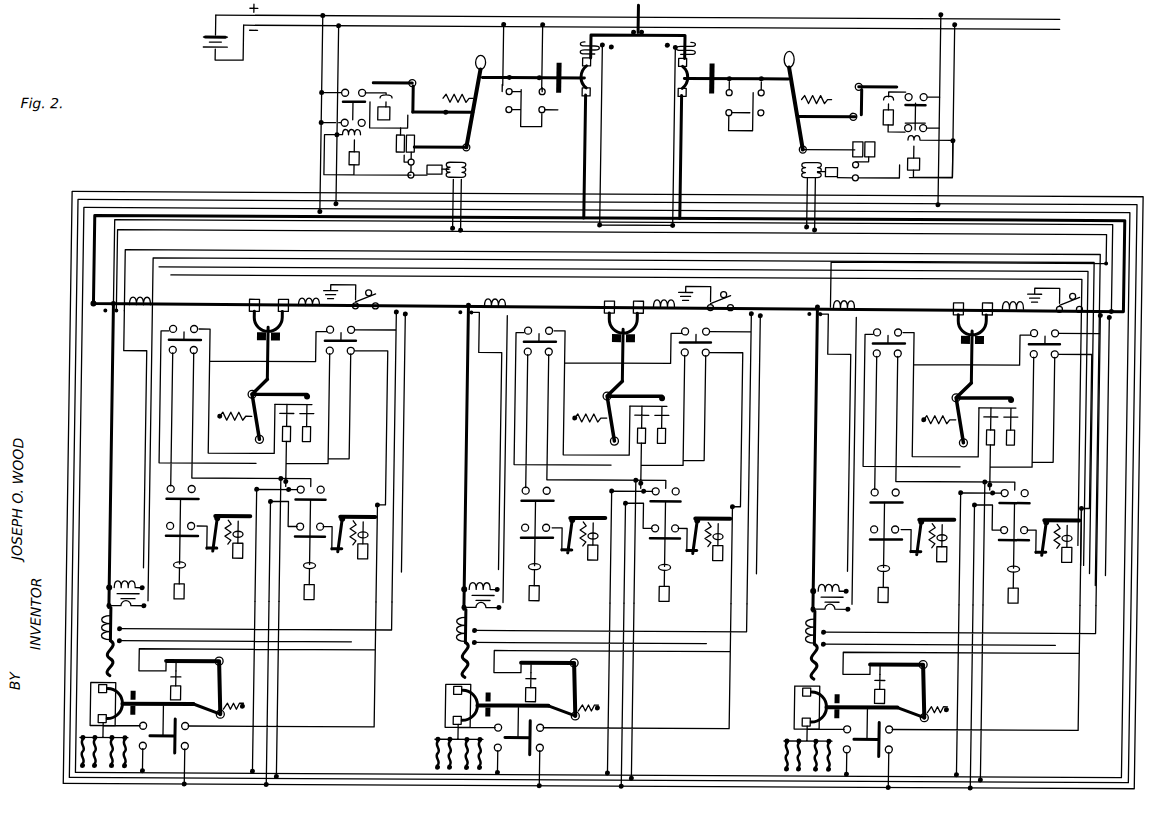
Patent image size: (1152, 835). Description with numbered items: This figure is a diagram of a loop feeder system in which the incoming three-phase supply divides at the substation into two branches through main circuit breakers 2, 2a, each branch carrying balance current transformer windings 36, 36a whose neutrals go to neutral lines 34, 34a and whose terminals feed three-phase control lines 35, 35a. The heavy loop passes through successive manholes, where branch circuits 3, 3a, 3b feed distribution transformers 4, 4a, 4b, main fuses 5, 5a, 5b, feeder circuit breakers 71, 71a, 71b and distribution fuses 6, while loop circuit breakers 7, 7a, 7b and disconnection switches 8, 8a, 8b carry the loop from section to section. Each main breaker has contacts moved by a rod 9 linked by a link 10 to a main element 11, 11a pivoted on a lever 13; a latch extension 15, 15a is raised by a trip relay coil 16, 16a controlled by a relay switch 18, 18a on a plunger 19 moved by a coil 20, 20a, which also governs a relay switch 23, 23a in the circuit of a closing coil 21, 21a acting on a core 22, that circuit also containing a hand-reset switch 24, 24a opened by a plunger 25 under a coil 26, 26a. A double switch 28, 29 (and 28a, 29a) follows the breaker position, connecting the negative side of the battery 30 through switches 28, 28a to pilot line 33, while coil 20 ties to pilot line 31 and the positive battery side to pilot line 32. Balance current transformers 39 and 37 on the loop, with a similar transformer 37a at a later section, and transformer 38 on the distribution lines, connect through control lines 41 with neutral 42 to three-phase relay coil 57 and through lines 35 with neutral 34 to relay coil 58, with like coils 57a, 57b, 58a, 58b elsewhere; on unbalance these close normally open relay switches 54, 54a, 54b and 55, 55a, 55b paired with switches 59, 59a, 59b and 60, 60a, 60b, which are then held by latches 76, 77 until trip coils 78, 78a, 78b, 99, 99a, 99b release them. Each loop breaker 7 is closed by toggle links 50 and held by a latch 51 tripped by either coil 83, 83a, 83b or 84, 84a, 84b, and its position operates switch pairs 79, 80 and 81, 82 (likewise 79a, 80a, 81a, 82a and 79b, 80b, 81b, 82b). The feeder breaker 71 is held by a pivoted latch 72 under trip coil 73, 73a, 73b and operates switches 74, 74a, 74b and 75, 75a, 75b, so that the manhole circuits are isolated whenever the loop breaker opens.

The main circuit breaker 2 is at (542, 76).
The main circuit breaker 2a is at (684, 82).
The branch circuit 3 is at (96, 445).
The branch circuit 3a is at (450, 447).
The line conductor 3b is at (795, 449).
The distribution transformer 4 is at (111, 594).
The transformer 4a is at (463, 595).
The transformer 4b is at (808, 597).
The main fuse 5 is at (97, 657).
The main fuse 5a is at (449, 659).
The signal conductor 5b is at (794, 661).
The fuses 6 is at (84, 756).
The circuit breaker 7 is at (268, 329).
The circuit breaker 7a is at (623, 330).
The circuit breaker 7b is at (972, 332).
The disconnection switch 8 is at (350, 297).
The disconnection switch 8a is at (705, 298).
The grounded switch 8b is at (1054, 300).
The rod 9 is at (521, 74).
The link 10 is at (492, 67).
The main element 11 is at (470, 78).
The operating lever 11a is at (800, 84).
The lever 13 is at (444, 110).
The extension 15 is at (405, 81).
The arm 15a is at (886, 84).
The controlling coil 16 is at (392, 96).
The magnet 16a is at (883, 112).
The relay switch 18 is at (350, 89).
The contact 18a is at (918, 93).
The plunger or armature 19 is at (355, 168).
The coil 20 is at (343, 138).
The coil 20a is at (925, 146).
The closing coil 21 is at (396, 142).
The relay 21a is at (852, 142).
The core 22 is at (417, 140).
The relay switch 23 is at (338, 118).
The contact 23a is at (930, 123).
The relay switch 24 is at (408, 165).
The contact 24a is at (852, 176).
The armature or plunger 25 is at (436, 174).
The coil 26 is at (466, 166).
The coil 26a is at (804, 168).
The switch 28 is at (512, 108).
The switch 28a is at (750, 131).
The switch 29 is at (548, 108).
The contact 29a is at (726, 104).
The battery 30 is at (206, 42).
The pilot line 31 is at (202, 191).
The pilot line 32 is at (230, 199).
The pilot line 33 is at (260, 207).
The neutral line 34 is at (383, 224).
The neutral line 34a is at (855, 224).
The three-phase control lines 35 is at (423, 224).
The conductor 35a is at (922, 224).
The three-phase windings 36 is at (582, 46).
The three-phase windings 36a is at (694, 46).
The balanced current transformer 37 is at (302, 292).
The coil 37a is at (862, 298).
The three-phase current transformer 38 is at (93, 623).
The balance current transformer 39 is at (137, 292).
The three-phase control lines 41 is at (312, 236).
The neutral line 42 is at (327, 260).
The toggle links 50 is at (241, 419).
The latch 51 is at (277, 385).
The relay switch 54 is at (156, 533).
The contact 54a is at (510, 536).
The contact 54b is at (859, 545).
The relay switch 55 is at (302, 542).
The contact 55a is at (681, 515).
The contact 55b is at (1033, 517).
The three-phase relay coil 57 is at (195, 585).
The resistance 57a is at (551, 598).
The resistance 57b is at (903, 594).
The three-phase relay coil 58 is at (302, 589).
The relay 58a is at (683, 585).
The relay 58b is at (1004, 598).
The switch 59 is at (156, 524).
The contact 59a is at (510, 526).
The contact 59b is at (859, 528).
The switch 60 is at (322, 519).
The contact 60a is at (681, 518).
The contact 60b is at (1031, 520).
The circuit breaker 71 is at (142, 694).
The relay 71a is at (482, 706).
The relay 71b is at (827, 708).
The pivoted latch 72 is at (205, 687).
The trip coil 73 is at (189, 685).
The contact 73a is at (546, 687).
The contact 73b is at (895, 688).
The switch 74 is at (157, 743).
The contact 74a is at (512, 747).
The contact 74b is at (861, 747).
The switch 75 is at (202, 738).
The contact 75a is at (559, 741).
The contact 75b is at (908, 743).
The latch 76 is at (228, 543).
The latch 77 is at (354, 522).
The trip coil 78 is at (208, 574).
The coil 78a is at (563, 576).
The coil 78b is at (903, 575).
The switch 79 is at (175, 332).
The contact 79a is at (531, 322).
The contact 79b is at (896, 323).
The switch 80 is at (196, 326).
The armature 80a is at (554, 346).
The armature 80b is at (907, 338).
The switch 81 is at (322, 332).
The contact 81a is at (677, 340).
The contact 81b is at (1025, 347).
The switch 82 is at (322, 351).
The contact 82a is at (706, 368).
The contact 82b is at (1053, 371).
The tripping coil 83 is at (294, 407).
The contact 83a is at (651, 408).
The contact 83b is at (1000, 410).
The tripping coil 84 is at (314, 422).
The contact 84a is at (672, 424).
The contact 84b is at (1021, 426).
The trip coil 99 is at (392, 537).
The coil 99a is at (750, 538).
The coil 99b is at (1058, 562).